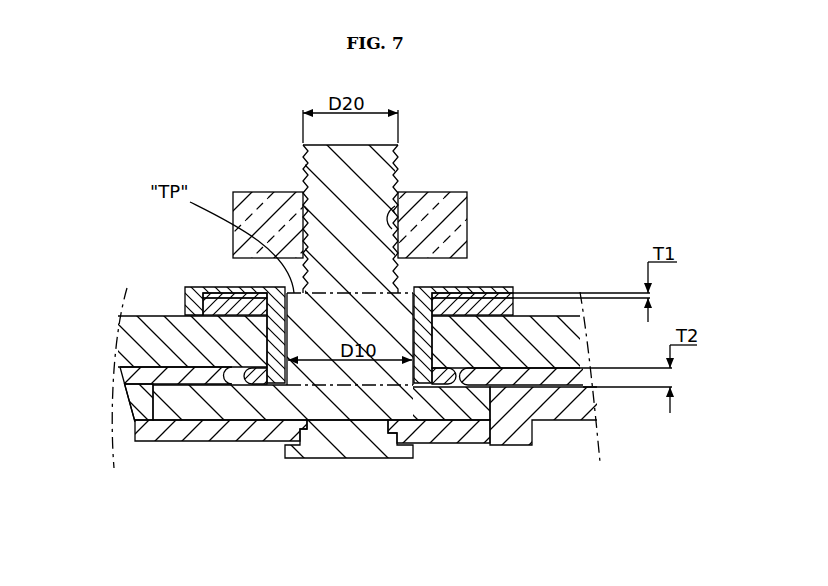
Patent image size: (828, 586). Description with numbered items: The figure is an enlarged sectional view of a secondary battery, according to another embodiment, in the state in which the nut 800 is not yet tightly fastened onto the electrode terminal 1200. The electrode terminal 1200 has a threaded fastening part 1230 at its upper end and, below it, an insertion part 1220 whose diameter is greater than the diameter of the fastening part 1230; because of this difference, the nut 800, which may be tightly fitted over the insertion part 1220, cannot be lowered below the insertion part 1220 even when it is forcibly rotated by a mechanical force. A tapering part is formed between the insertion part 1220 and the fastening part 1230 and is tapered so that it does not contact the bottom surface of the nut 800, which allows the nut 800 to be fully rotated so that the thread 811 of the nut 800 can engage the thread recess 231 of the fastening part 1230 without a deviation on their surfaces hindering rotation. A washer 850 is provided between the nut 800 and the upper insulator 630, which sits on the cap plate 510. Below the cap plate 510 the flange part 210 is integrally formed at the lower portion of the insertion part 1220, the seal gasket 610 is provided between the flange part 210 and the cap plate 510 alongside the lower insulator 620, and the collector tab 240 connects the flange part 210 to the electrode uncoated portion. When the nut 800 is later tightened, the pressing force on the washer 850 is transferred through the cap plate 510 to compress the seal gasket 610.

The electrode terminal 1200 is at (328, 265).
The fastening part 1230 is at (303, 180).
The insertion part 1220 is at (287, 294).
The thread recess 231 is at (395, 176).
The thread 811 is at (395, 206).
The nut 800 is at (470, 189).
The washer 850 is at (485, 290).
The upper insulator 630 is at (515, 312).
The cap plate 510 is at (130, 341).
The flange part 210 is at (188, 407).
The collector tab 240 is at (262, 430).
The seal gasket 610 is at (434, 392).
The lower insulator 620 is at (553, 425).